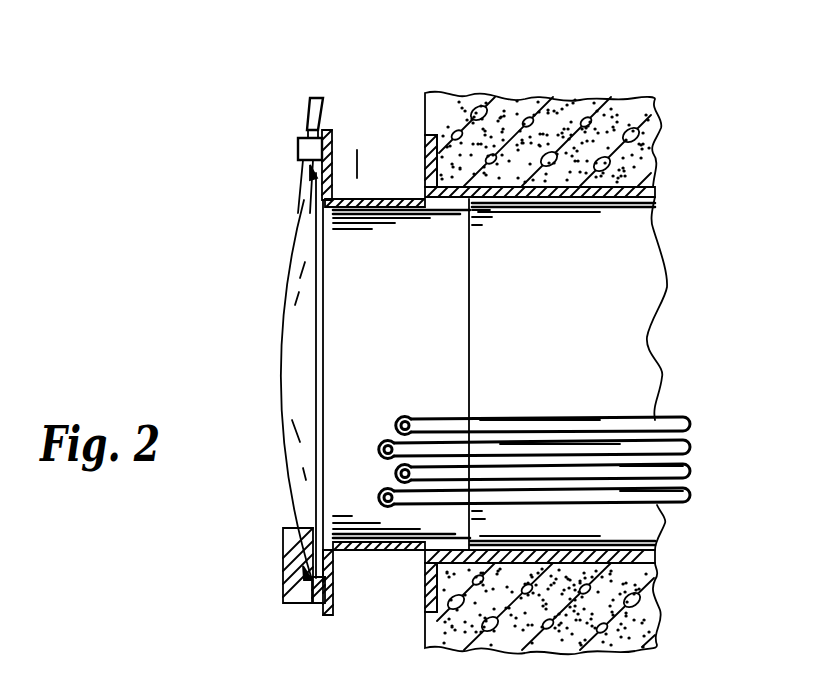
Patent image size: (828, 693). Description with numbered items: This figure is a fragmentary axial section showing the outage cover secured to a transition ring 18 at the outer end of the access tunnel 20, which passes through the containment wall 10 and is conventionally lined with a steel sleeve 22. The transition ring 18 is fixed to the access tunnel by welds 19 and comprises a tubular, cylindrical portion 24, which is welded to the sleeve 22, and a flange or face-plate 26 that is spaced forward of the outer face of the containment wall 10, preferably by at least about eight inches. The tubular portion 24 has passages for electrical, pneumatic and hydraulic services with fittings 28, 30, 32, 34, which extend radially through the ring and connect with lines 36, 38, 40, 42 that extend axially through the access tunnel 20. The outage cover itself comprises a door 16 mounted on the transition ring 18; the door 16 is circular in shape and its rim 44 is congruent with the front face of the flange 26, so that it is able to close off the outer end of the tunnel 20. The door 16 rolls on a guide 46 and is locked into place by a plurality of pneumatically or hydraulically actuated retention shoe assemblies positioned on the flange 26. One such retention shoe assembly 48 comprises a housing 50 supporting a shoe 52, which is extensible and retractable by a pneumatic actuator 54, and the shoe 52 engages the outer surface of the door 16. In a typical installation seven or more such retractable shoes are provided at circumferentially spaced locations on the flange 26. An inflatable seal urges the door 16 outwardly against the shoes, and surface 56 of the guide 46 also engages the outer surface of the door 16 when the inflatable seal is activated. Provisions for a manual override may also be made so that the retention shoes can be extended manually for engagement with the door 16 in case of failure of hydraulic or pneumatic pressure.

The containment wall 10 is at (660, 122).
The door 16 is at (297, 283).
The transition ring 18 is at (357, 178).
The welds 19 is at (422, 193).
The access tunnel 20 is at (650, 300).
The steel sleeve 22 is at (654, 200).
The tubular, cylindrical portion 24 is at (407, 204).
The flange or face-plate 26 is at (331, 130).
The fitting 28 is at (410, 416).
The fitting 30 is at (384, 441).
The fitting 32 is at (397, 480).
The fitting 34 is at (380, 498).
The line 36 is at (490, 426).
The line 38 is at (550, 449).
The line 40 is at (680, 469).
The line 42 is at (670, 505).
The rim 44 is at (320, 347).
The guide 46 is at (284, 572).
The retention shoe assembly 48 is at (272, 122).
The housing 50 is at (298, 148).
The shoe 52 is at (298, 201).
The pneumatic actuator 54 is at (308, 102).
The surface 56 is at (318, 612).